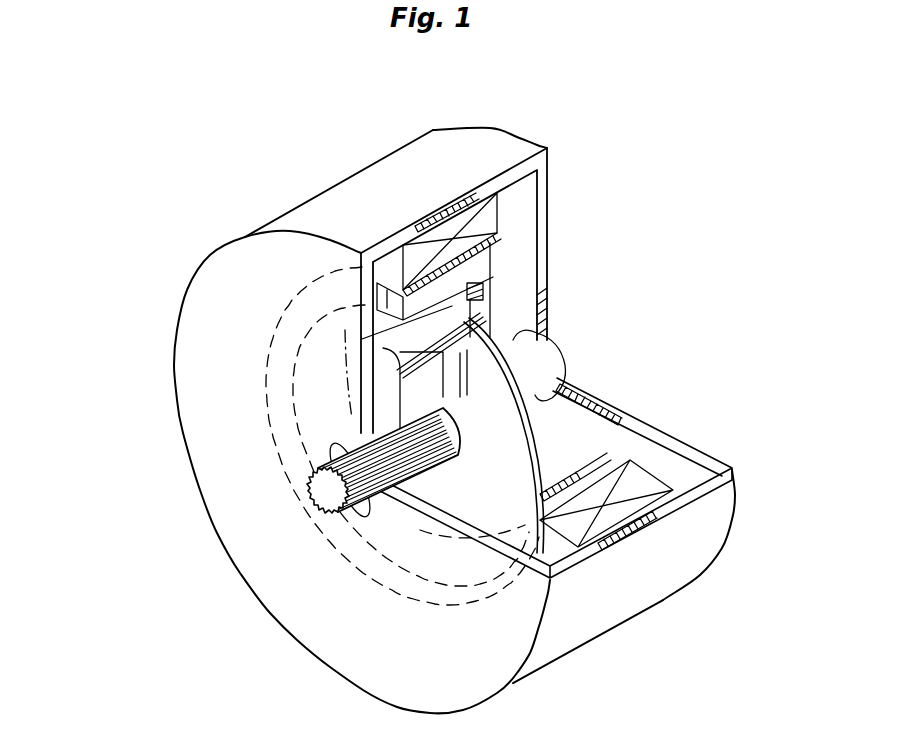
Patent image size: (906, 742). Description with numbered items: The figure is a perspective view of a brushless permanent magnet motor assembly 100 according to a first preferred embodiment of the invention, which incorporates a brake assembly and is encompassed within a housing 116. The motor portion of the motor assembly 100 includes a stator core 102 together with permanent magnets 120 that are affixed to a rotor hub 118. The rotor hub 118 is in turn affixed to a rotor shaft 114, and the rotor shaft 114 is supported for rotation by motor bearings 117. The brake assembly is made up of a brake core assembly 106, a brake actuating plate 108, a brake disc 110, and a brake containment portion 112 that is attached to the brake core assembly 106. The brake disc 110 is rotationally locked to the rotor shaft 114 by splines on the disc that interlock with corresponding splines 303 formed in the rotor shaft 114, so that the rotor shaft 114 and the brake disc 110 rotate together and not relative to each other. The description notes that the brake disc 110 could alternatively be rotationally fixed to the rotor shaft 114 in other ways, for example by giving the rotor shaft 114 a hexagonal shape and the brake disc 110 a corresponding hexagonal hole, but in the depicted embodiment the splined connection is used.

The motor assembly 100 is at (186, 158).
The stator core 102 is at (482, 213).
The brake core assembly 106 is at (413, 387).
The brake actuating plate 108 is at (363, 340).
The brake disc 110 is at (580, 437).
The brake containment portion 112 is at (493, 300).
The rotor shaft 114 is at (548, 363).
The housing 116 is at (718, 468).
The motor bearings 117 is at (548, 338).
The rotor hub 118 is at (498, 272).
The permanent magnets 120 is at (497, 236).
The splines 303 is at (352, 527).